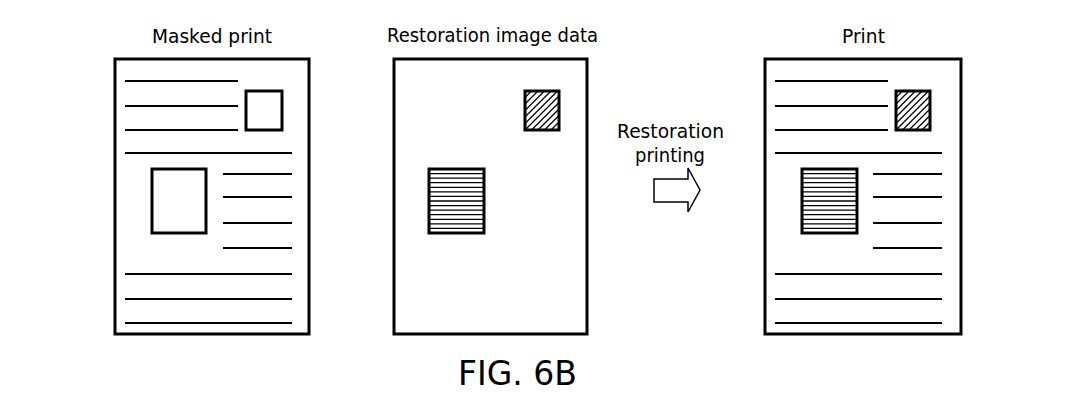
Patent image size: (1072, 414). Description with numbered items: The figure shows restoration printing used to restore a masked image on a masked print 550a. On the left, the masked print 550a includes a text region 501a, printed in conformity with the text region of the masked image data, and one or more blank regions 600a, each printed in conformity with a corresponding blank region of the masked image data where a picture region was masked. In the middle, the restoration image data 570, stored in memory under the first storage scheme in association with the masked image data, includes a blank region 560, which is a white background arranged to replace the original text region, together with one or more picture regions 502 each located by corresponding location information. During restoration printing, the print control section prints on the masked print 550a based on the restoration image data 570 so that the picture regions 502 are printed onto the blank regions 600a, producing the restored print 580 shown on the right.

The masked print 550a is at (221, 180).
The blank region 600a is at (267, 116).
The text region 501a is at (277, 259).
The restoration image data 570 is at (509, 196).
The picture region 502 is at (525, 108).
The blank region 560 is at (567, 276).
The restored print 580 is at (972, 90).